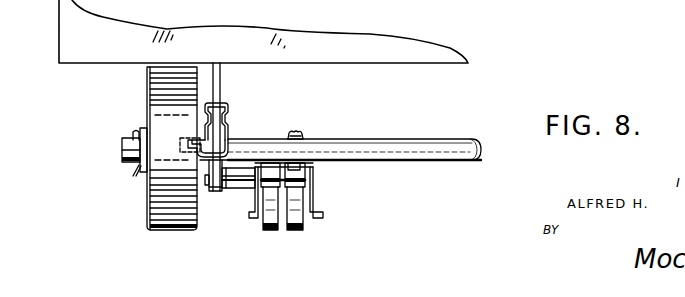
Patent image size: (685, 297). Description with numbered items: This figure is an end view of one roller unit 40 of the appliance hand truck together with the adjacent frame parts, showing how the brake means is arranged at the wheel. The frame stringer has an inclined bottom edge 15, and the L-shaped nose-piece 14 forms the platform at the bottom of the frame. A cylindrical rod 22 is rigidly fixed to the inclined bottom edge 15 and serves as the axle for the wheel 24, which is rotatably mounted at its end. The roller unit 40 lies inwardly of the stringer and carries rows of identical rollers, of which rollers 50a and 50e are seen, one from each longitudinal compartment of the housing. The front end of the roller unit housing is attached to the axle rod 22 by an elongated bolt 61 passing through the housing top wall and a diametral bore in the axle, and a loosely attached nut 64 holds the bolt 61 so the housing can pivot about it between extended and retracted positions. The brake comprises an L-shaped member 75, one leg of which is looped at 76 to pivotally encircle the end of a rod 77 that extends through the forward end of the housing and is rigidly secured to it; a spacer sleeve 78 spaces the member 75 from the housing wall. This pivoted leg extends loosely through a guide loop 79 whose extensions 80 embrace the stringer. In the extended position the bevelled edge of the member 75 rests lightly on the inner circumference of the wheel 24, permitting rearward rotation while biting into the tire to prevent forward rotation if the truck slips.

The nose-piece 14 is at (425, 50).
The inclined bottom edge 15 is at (218, 93).
The cylindrical rod 22 is at (450, 142).
The wheel 24 is at (173, 232).
The roller unit 40 is at (325, 209).
The roller 50a is at (272, 232).
The roller 50e is at (293, 233).
The elongated bolt 61 is at (296, 130).
The nut 64 is at (303, 137).
The L-shaped member 75 is at (180, 150).
The loop 76 is at (215, 193).
The rod 77 is at (310, 187).
The spacer sleeve 78 is at (238, 188).
The guide loop 79 is at (228, 130).
The extension 80 is at (228, 107).